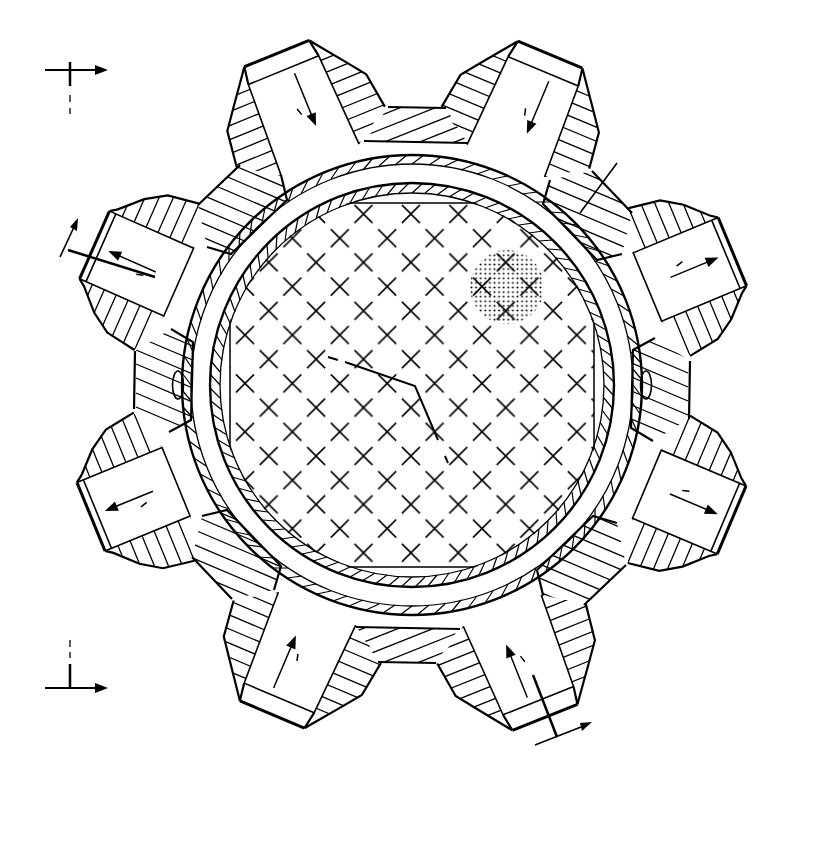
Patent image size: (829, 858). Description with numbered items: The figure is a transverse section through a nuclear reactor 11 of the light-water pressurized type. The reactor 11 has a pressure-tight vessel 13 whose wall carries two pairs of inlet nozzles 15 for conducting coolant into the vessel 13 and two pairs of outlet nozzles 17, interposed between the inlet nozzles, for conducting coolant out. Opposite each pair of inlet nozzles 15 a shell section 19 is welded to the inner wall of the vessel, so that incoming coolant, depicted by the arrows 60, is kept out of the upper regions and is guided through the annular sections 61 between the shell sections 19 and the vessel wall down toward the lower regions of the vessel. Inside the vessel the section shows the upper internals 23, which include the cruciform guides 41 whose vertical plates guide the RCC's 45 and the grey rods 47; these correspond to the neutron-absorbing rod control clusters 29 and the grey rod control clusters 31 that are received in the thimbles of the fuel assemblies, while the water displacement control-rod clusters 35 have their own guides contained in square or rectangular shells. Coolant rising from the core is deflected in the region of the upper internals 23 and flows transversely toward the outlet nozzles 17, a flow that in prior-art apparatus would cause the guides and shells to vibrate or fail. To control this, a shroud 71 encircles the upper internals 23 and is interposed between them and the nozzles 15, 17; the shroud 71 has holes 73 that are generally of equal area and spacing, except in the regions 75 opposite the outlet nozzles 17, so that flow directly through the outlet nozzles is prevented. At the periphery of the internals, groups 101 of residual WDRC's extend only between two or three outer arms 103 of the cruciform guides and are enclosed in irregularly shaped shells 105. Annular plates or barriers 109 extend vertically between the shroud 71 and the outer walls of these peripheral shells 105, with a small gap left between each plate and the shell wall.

The nuclear reactor 11 is at (759, 567).
The pressure-tight vessel 13 is at (724, 437).
The inlet nozzles 15 is at (253, 117).
The outlet nozzles 17 is at (715, 310).
The shell section 19 is at (262, 160).
The upper internals 23 is at (590, 396).
The neutron-absorbing rod control clusters 29 is at (545, 298).
The grey rod control clusters 31 is at (437, 228).
The water displacement control-rod clusters 35 is at (268, 296).
The cruciform guides 41 is at (572, 382).
The RCC's 45 is at (600, 300).
The grey rods 47 is at (452, 305).
The arrows 60 is at (530, 95).
The annular sections 61 is at (245, 585).
The shroud 71 is at (668, 250).
The holes 73 is at (373, 187).
The regions 75 is at (125, 532).
The groups of residual WDRC's 101 is at (556, 490).
The outer arms 103 is at (587, 587).
The irregularly shaped shells 105 is at (250, 630).
The annular plates or barriers 109 is at (292, 305).